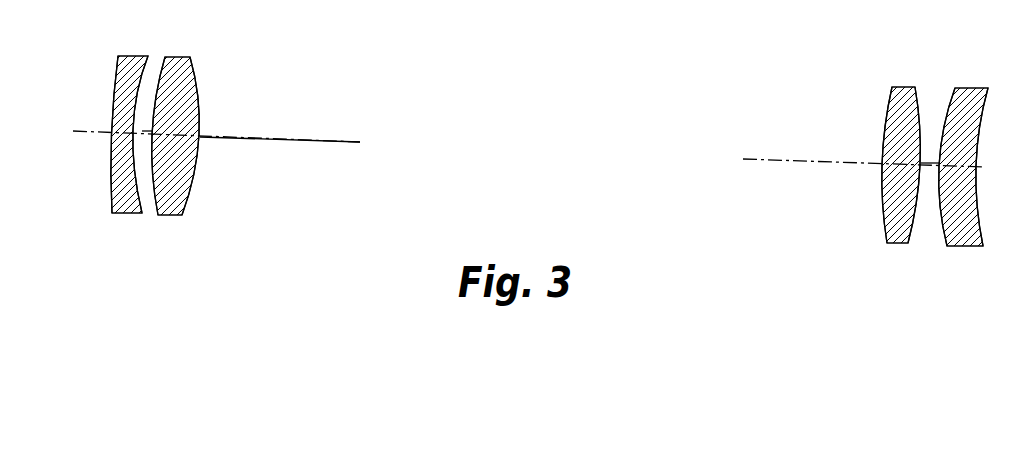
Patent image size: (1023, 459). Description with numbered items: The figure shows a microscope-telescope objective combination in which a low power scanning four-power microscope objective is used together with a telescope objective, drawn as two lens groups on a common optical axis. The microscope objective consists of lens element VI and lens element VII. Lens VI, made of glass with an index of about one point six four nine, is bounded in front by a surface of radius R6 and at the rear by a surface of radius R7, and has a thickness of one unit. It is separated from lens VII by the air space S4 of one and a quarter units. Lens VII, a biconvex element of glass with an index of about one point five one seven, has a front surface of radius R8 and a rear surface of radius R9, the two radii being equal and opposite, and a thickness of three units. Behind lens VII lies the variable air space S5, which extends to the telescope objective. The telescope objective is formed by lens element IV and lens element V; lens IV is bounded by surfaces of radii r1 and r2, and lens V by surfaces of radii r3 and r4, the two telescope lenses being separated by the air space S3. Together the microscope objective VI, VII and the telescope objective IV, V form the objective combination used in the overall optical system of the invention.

The lens element VI is at (148, 48).
The lens element VII is at (194, 40).
The lens element IV is at (920, 77).
The lens element V is at (984, 69).
The front surface radius of lens VI R6 is at (112, 192).
The rear surface radius of lens VI R7 is at (138, 188).
The front surface radius of lens VII R8 is at (155, 214).
The rear surface radius of lens VII R9 is at (183, 207).
The air space between lenses VI and VII S4 is at (138, 128).
The variable air space behind lens VII S5 is at (256, 138).
The air space between lenses IV and V S3 is at (932, 165).
The front surface radius of lens IV r1 is at (887, 236).
The rear surface radius of lens IV r2 is at (909, 240).
The front surface radius of lens V r3 is at (948, 241).
The rear surface radius of lens V r4 is at (983, 240).